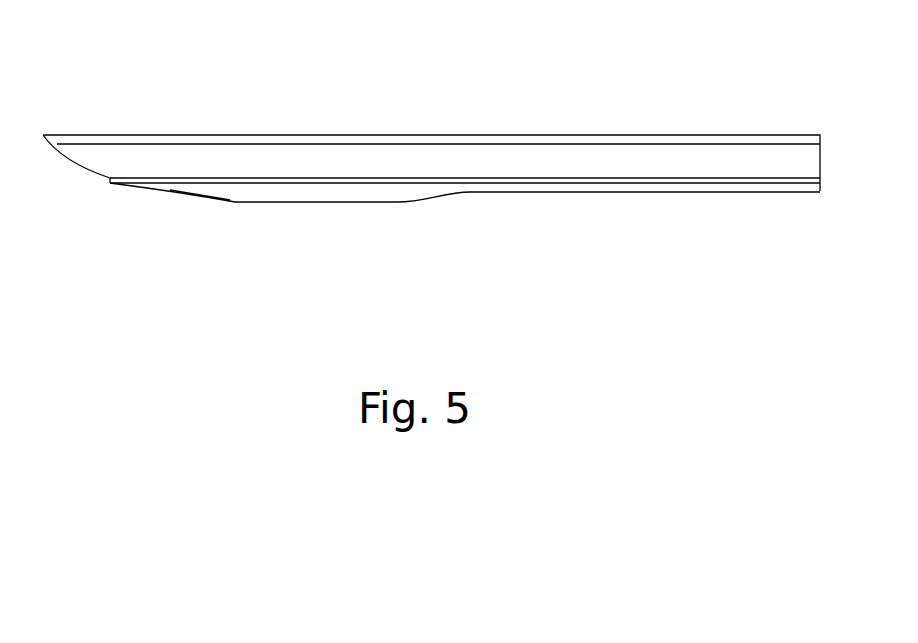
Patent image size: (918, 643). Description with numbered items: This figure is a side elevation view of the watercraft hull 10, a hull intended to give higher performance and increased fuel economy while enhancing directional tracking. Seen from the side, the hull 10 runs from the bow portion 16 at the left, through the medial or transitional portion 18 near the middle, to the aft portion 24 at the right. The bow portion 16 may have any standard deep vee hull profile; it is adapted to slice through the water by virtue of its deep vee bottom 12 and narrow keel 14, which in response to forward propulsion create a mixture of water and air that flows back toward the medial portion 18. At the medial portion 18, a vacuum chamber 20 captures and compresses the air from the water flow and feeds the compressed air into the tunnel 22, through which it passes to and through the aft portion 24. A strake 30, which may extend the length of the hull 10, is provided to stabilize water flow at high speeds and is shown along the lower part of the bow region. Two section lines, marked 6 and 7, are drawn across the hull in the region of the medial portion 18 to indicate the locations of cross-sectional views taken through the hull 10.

The watercraft hull 10 is at (263, 134).
The deep vee bottom 12 is at (183, 165).
The narrow keel 14 is at (265, 202).
The bow portion 16 is at (172, 190).
The medial portion 18 is at (432, 192).
The vacuum chamber 20 is at (463, 193).
The tunnel 22 is at (582, 192).
The aft portion 24 is at (730, 162).
The strake 30 is at (223, 187).
The section line 6- 6 is at (452, 200).
The section line 7- 7 is at (422, 178).